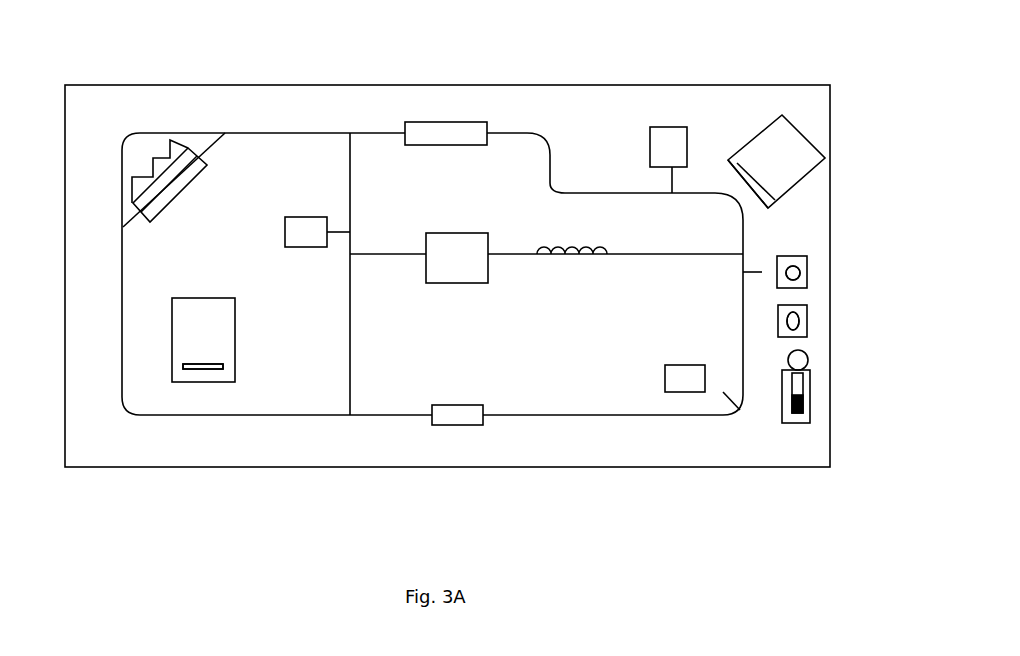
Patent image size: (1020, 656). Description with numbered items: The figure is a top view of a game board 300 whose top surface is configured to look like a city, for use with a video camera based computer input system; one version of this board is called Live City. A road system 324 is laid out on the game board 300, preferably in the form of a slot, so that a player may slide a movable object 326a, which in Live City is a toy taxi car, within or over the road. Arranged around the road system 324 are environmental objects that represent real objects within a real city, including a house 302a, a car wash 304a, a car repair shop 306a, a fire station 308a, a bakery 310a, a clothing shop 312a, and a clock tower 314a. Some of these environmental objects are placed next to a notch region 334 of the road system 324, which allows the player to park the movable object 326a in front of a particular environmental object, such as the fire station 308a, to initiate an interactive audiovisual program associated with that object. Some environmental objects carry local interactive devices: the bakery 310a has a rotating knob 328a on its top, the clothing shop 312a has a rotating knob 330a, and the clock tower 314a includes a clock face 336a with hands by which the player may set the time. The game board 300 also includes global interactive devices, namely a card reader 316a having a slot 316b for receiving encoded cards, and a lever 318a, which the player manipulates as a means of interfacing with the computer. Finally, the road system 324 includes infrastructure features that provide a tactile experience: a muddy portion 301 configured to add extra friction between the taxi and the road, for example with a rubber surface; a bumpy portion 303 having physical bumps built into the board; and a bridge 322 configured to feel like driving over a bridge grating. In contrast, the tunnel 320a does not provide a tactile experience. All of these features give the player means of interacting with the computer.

The game board 300 is at (110, 87).
The muddy portion 301 is at (553, 435).
The house 302a is at (285, 217).
The bumpy portion 303 is at (565, 266).
The car wash 304a is at (457, 258).
The car repair shop 306a is at (650, 145).
The fire station 308a is at (665, 380).
The bakery 310a is at (807, 272).
The clothing shop 312a is at (807, 313).
The clock tower 314a is at (797, 150).
The card reader 316a is at (190, 300).
The slot 316b is at (198, 369).
The lever 318a is at (782, 423).
The tunnel 320a is at (417, 130).
The bridge 322 is at (137, 185).
The road system 324 is at (130, 413).
The movable object 326a is at (445, 418).
The rotating knob 328a is at (797, 268).
The rotating knob 330a is at (802, 323).
The notch region 334 is at (764, 323).
The clock face 336a is at (737, 162).